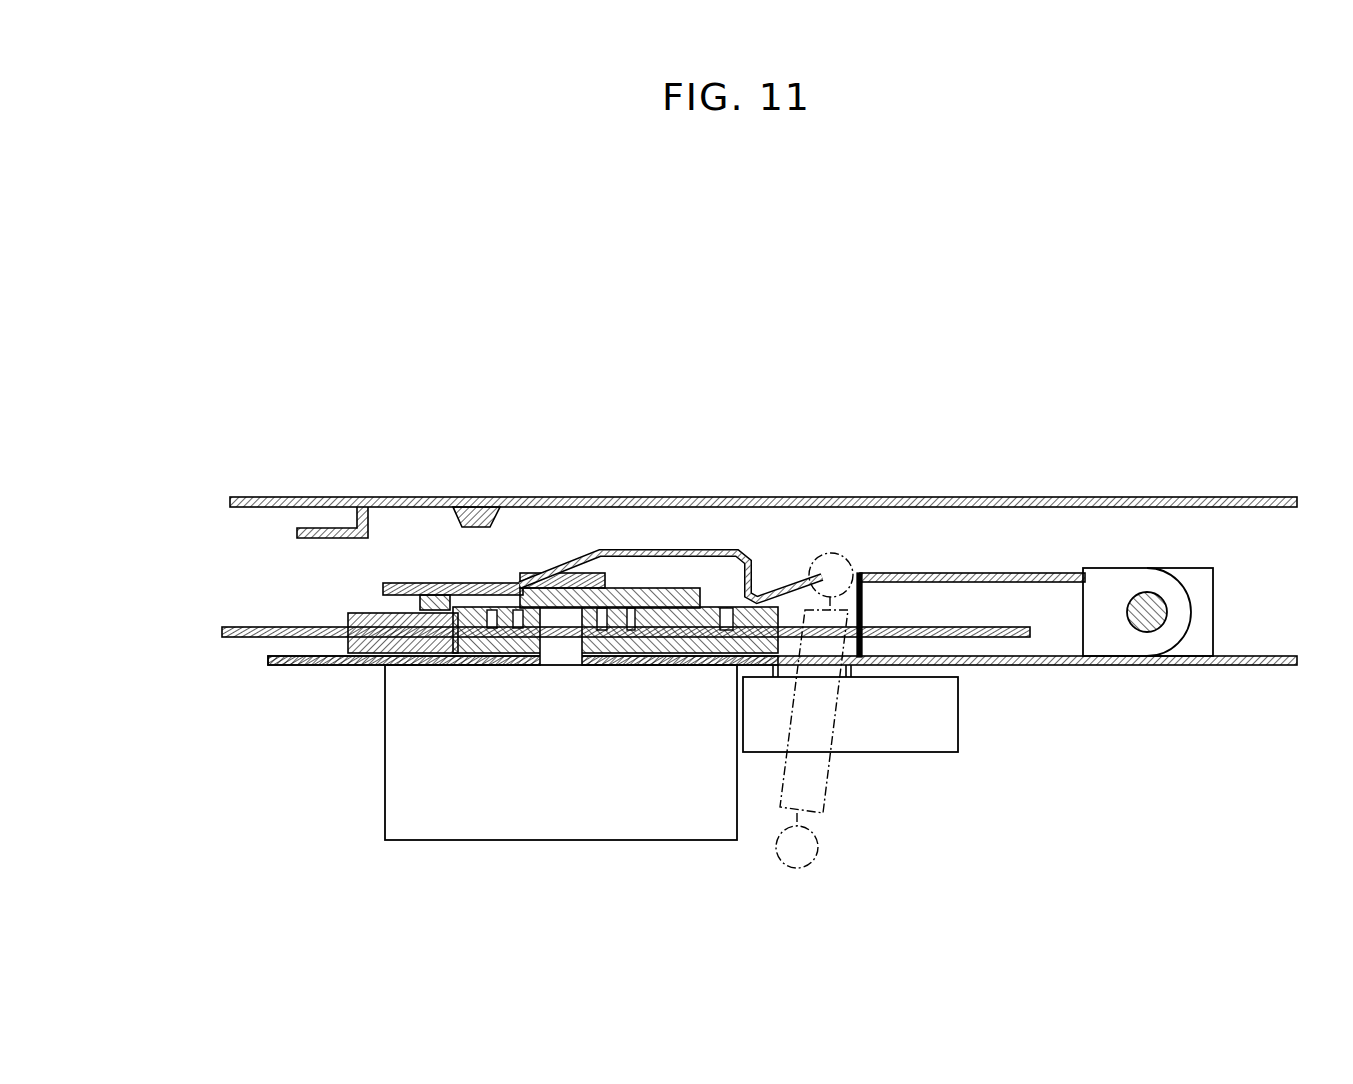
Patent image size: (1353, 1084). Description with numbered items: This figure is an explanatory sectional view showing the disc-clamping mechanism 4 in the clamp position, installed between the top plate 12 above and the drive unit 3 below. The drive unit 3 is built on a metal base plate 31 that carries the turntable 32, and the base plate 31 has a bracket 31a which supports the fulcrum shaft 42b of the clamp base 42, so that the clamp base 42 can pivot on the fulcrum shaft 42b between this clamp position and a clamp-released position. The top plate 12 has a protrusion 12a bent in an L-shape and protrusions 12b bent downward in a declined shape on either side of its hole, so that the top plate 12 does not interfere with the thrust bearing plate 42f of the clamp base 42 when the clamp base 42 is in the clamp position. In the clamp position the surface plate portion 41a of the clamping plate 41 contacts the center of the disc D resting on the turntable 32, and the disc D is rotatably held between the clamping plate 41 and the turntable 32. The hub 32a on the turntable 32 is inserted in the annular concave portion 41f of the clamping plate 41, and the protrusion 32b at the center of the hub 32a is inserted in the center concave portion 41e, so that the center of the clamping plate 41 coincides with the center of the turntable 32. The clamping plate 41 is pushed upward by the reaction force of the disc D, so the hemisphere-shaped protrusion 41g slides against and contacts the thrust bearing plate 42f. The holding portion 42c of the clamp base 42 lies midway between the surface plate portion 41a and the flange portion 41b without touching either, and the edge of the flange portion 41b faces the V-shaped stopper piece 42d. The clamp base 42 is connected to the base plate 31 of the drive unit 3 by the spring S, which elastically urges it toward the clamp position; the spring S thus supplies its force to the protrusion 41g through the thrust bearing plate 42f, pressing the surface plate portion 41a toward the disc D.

The drive unit 3 is at (963, 778).
The disc-clamping mechanism 4 is at (845, 540).
The top plate 12 is at (1032, 498).
The protrusion 12a is at (312, 527).
The protrusions 12b is at (474, 518).
The base plate 31 is at (1263, 667).
The bracket 31a is at (1200, 580).
The turntable 32 is at (348, 667).
The hub 32a is at (646, 592).
The protrusion 32b is at (520, 580).
The clamping plate 41 is at (352, 577).
The surface plate portion 41a is at (348, 613).
The flange portion 41b is at (392, 583).
The center concave portion 41e is at (600, 594).
The annular concave portion 41f is at (672, 592).
The hemisphere-shaped protrusion 41g is at (546, 596).
The clamp base 42 is at (967, 610).
The fulcrum shaft 42b is at (1146, 600).
The holding portion 42c is at (433, 598).
The stopper piece 42d is at (753, 545).
The thrust bearing plate 42f is at (572, 660).
The disc D is at (238, 642).
The spring S is at (830, 773).